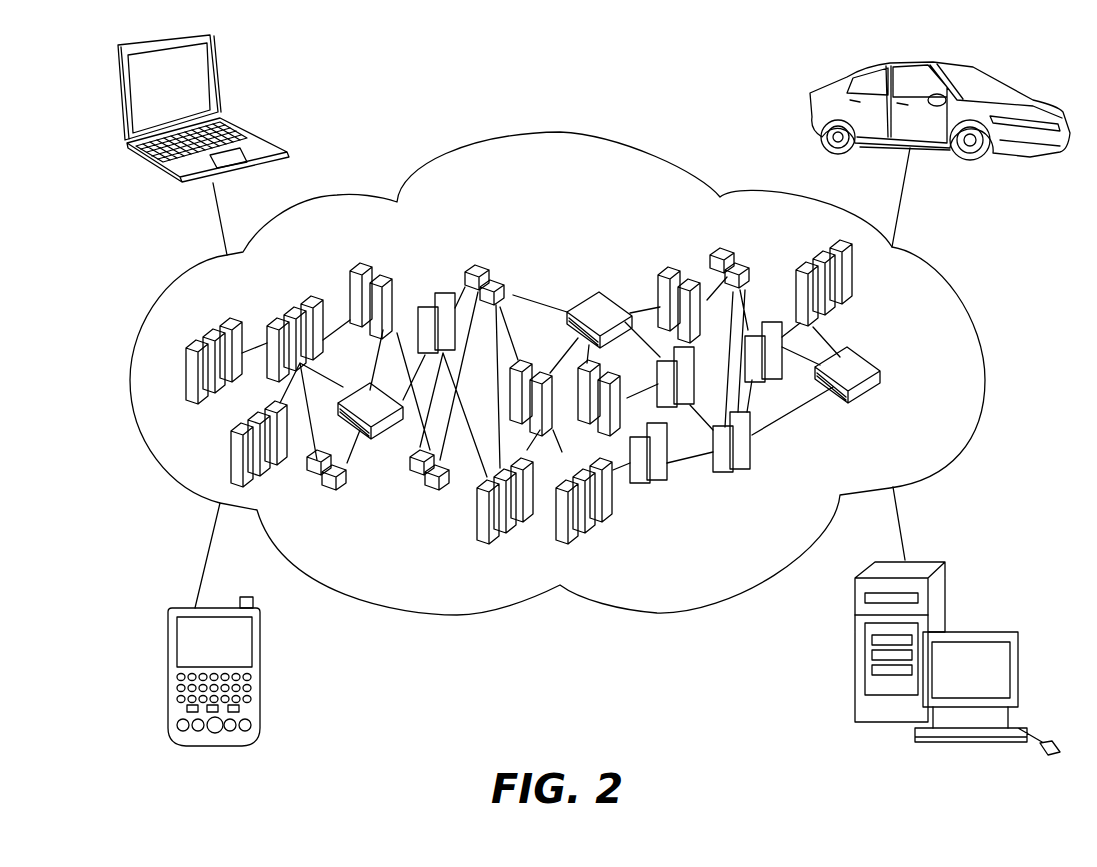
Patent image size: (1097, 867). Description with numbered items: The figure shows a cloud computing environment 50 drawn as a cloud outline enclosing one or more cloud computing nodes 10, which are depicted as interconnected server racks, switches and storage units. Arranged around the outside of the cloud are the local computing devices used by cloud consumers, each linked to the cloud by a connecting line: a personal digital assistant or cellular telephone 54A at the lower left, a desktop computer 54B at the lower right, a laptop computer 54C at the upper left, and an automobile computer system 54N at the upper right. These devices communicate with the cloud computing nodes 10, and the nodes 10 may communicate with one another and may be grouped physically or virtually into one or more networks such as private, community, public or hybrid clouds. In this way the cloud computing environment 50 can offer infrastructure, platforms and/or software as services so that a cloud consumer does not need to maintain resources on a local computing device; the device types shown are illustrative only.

The cloud computing nodes 10 is at (460, 209).
The cloud computing environment 50 is at (562, 138).
The personal digital assistant or cellular telephone 54A is at (245, 640).
The desktop computer 54B is at (988, 635).
The laptop computer 54C is at (207, 88).
The automobile computer system 54N is at (806, 97).